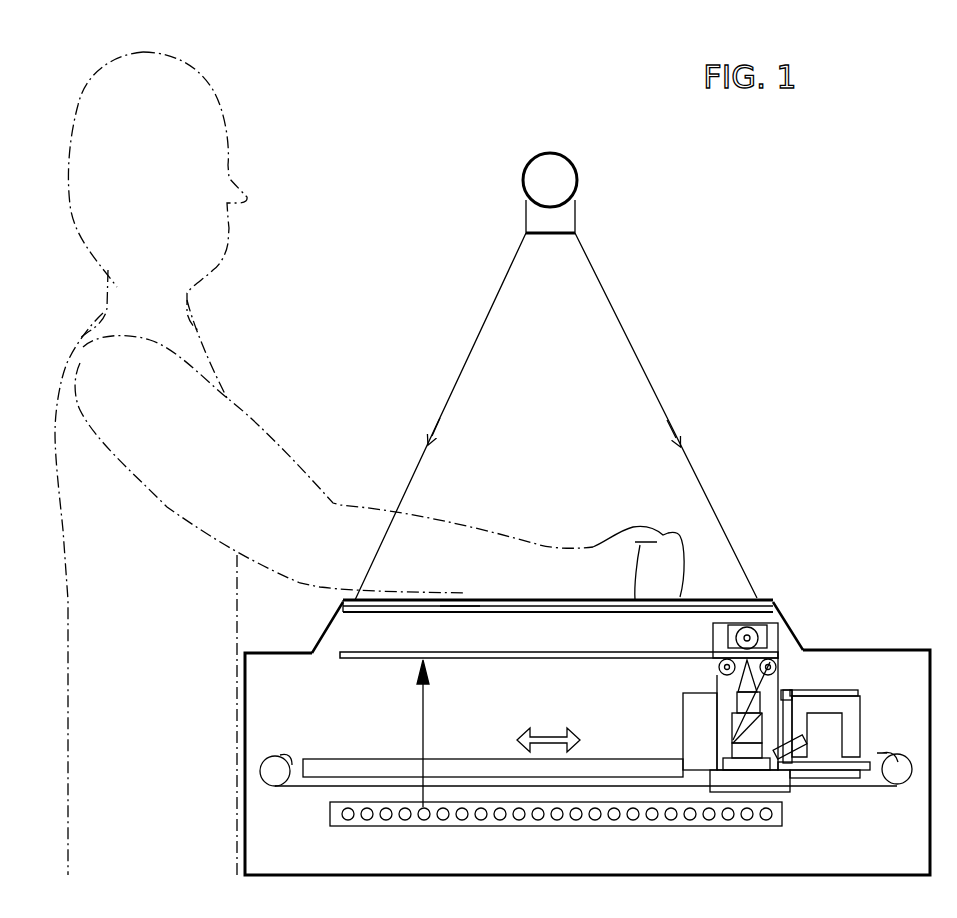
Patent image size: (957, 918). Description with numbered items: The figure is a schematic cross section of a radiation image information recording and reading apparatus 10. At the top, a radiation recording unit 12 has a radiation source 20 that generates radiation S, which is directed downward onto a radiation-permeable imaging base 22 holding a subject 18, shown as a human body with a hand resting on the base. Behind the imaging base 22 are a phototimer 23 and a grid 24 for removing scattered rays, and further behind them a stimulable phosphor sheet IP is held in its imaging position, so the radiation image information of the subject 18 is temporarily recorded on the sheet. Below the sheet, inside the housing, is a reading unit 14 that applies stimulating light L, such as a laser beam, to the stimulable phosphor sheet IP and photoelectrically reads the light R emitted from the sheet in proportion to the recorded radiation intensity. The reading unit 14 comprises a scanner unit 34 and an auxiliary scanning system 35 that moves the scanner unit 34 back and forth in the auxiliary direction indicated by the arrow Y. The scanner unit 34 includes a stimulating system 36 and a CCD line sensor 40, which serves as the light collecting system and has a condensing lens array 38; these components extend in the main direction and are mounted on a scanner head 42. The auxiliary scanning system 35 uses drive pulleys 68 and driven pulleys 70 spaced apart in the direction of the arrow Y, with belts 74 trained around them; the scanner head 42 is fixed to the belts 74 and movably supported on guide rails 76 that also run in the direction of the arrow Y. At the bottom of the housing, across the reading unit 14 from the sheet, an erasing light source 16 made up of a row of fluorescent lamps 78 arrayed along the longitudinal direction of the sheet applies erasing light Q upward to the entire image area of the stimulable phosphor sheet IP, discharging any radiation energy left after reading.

The radiation image information recording and reading apparatus 10 is at (789, 159).
The radiation recording unit 12 is at (688, 389).
The reading unit 14 is at (779, 651).
The erasing light source 16 is at (342, 832).
The subject 18 is at (350, 545).
The radiation source 20 is at (545, 170).
The imaging base 22 is at (693, 597).
The phototimer 23 is at (640, 545).
The grid 24 is at (460, 608).
The scanner unit 34 is at (758, 729).
The auxiliary scanning system 35 is at (821, 809).
The stimulating system 36 is at (809, 686).
The condensing lens array 38 is at (774, 735).
The CCD line sensor 40 is at (667, 723).
The scanner head 42 is at (850, 710).
The drive pulleys 68 is at (897, 762).
The driven pulleys 70 is at (272, 772).
The belts 74 is at (867, 786).
The guide rails 76 is at (343, 770).
The fluorescent lamps 78 is at (460, 821).
The radiation S is at (619, 322).
The stimulable phosphor sheet IP is at (490, 660).
The erasing light Q is at (422, 746).
The auxiliary direction Y is at (548, 730).
The emitted light R is at (737, 688).
The stimulating light L is at (775, 670).